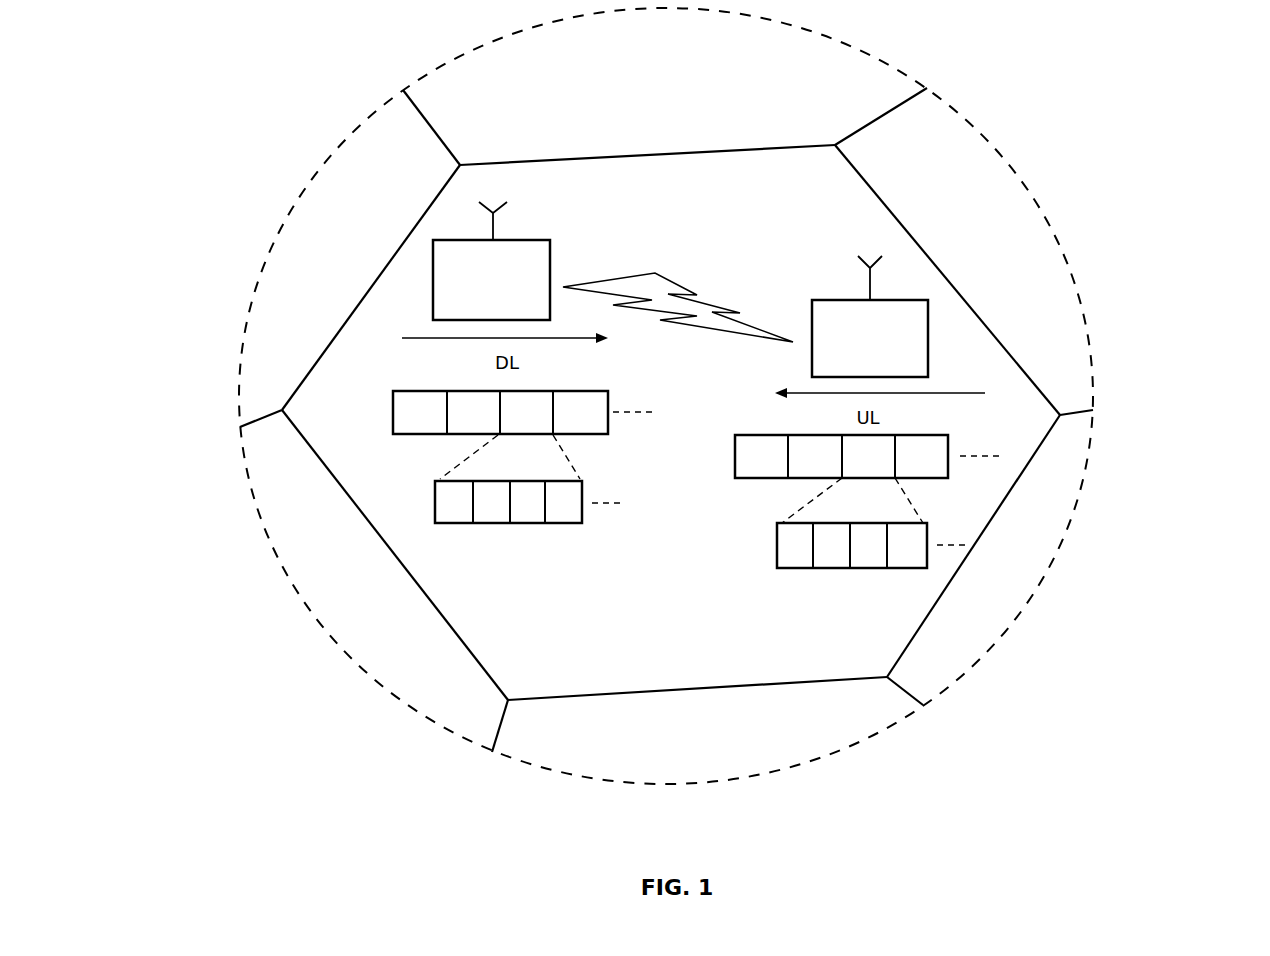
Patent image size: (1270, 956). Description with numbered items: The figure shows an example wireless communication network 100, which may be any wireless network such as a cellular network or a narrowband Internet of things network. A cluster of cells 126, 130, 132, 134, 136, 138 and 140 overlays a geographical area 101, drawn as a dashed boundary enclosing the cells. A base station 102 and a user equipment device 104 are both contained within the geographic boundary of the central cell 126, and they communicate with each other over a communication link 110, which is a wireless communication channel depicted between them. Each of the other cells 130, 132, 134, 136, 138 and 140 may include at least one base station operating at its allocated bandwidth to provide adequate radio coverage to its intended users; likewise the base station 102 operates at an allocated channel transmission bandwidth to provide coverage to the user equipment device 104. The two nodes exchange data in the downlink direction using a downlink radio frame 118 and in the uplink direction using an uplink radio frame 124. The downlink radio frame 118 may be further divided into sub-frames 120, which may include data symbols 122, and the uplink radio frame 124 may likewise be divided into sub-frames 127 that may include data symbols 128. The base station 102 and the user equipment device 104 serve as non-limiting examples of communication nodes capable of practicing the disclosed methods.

The wireless communication network 100 is at (1112, 132).
The geographical area 101 is at (252, 262).
The base station 102 is at (477, 309).
The user equipment device 104 is at (855, 368).
The communication link 110 is at (666, 288).
The downlink radio frame 118 is at (400, 417).
The sub-frame 120 is at (437, 513).
The data symbol 122 is at (532, 520).
The uplink radio frame 124 is at (743, 458).
The cell 126 is at (677, 659).
The sub-frame 127 is at (780, 557).
The data symbol 128 is at (872, 562).
The cell 130 is at (311, 261).
The cell 132 is at (655, 99).
The cell 134 is at (973, 254).
The cell 136 is at (988, 588).
The cell 138 is at (693, 744).
The cell 140 is at (333, 599).